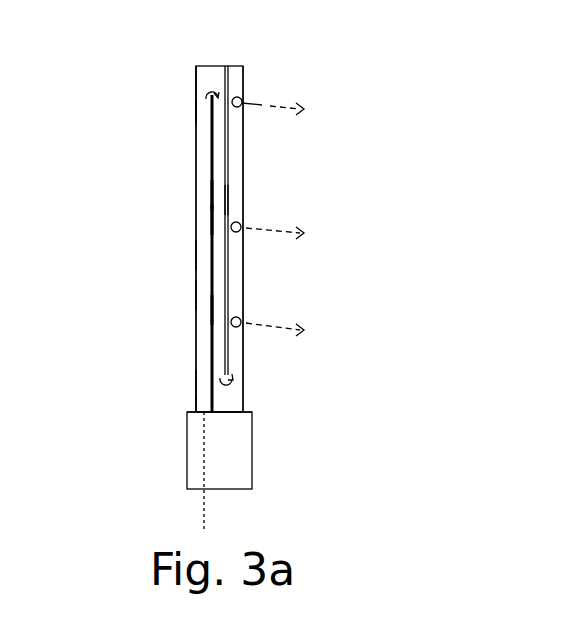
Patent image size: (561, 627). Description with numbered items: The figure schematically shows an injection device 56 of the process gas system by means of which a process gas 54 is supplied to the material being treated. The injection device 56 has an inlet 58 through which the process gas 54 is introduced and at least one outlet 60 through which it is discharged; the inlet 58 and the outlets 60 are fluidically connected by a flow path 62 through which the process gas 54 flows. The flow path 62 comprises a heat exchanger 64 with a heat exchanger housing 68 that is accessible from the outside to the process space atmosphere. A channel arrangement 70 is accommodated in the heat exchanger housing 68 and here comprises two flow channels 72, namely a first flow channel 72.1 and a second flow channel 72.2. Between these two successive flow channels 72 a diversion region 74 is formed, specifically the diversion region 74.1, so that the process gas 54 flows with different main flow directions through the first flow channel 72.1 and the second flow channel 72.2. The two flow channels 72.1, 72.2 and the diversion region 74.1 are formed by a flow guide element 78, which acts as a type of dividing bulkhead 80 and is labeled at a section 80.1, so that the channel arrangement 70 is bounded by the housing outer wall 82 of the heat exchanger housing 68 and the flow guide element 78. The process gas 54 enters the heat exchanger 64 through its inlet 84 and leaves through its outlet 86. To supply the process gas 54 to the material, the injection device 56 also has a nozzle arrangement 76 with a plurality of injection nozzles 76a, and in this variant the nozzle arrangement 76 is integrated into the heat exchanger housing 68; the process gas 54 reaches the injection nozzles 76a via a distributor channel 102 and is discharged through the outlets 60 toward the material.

The process gas 54 is at (242, 102).
The injection device 56 is at (332, 63).
The inlet 58 is at (204, 408).
The outlet 60 is at (250, 115).
The flow path 62 is at (193, 297).
The heat exchanger 64 is at (205, 65).
The heat exchanger housing 68 is at (198, 97).
The channel arrangement 70 is at (210, 308).
The flow channel 72 is at (196, 383).
The first flow channel 72.1 is at (198, 400).
The second flow channel 72.2 is at (228, 157).
The diversion region 74 is at (199, 67).
The first diversion region 74.1 is at (197, 80).
The nozzle arrangement 76 is at (235, 63).
The injection nozzle 76a is at (250, 115).
The flow guide element 78 is at (210, 165).
The dividing bulkhead 80 is at (210, 197).
The partition section end 80.1 is at (210, 218).
The housing outer wall 82 is at (194, 255).
The inlet of the heat exchanger 84 is at (203, 418).
The outlet of the heat exchanger 86 is at (231, 377).
The distributor channel 102 is at (235, 198).